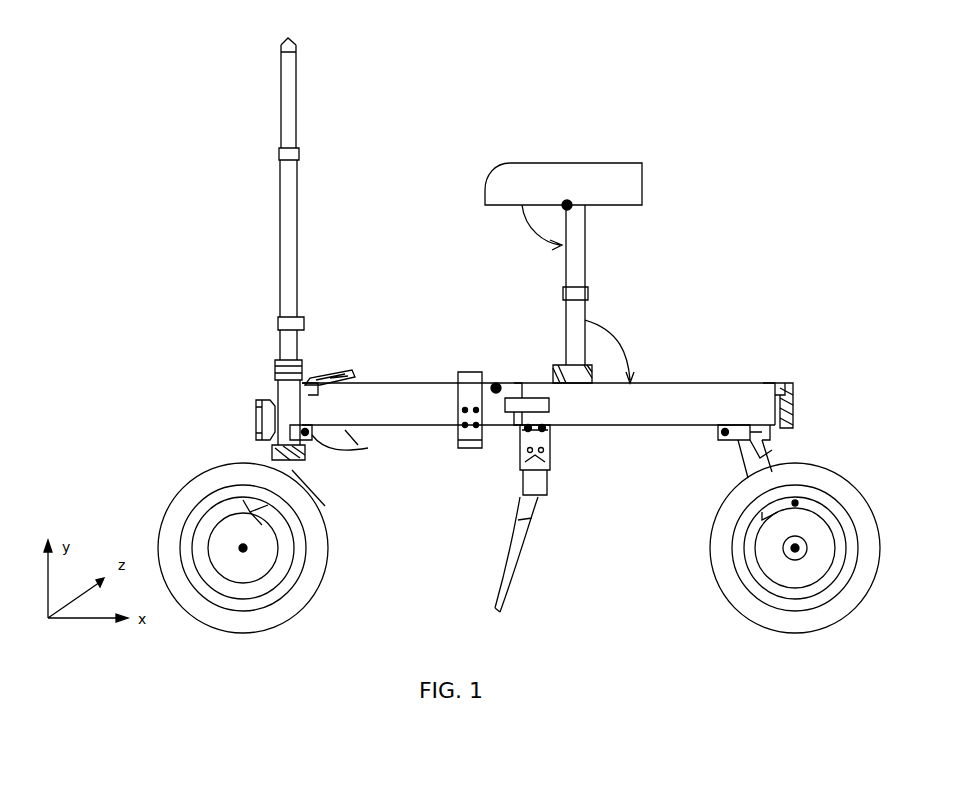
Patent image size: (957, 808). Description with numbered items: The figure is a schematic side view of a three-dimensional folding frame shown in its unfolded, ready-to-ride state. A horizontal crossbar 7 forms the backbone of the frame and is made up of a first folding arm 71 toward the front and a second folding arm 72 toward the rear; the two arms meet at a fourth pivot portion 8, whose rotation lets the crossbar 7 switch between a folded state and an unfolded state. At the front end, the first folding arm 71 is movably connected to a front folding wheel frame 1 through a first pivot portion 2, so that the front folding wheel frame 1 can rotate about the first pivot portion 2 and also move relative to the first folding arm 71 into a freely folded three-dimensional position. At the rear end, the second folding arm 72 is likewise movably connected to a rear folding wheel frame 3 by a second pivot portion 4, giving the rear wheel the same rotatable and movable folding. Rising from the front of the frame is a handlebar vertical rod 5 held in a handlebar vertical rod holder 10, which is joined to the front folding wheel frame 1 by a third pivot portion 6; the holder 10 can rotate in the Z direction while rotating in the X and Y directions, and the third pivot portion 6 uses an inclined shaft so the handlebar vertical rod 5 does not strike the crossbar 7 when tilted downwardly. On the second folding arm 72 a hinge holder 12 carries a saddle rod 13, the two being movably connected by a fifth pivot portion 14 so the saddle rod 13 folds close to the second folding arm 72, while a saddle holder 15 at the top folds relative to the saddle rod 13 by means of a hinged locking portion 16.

The front folding wheel frame 1 is at (253, 431).
The first pivot portion 2 is at (330, 438).
The rear folding wheel frame 3 is at (770, 456).
The second pivot portion 4 is at (735, 425).
The handlebar vertical rod 5 is at (278, 343).
The third pivot portion 6 is at (303, 362).
The crossbar 7 is at (441, 427).
The fourth pivot portion 8 is at (498, 383).
The handlebar vertical rod holder 10 is at (275, 371).
The hinge holder 12 is at (575, 392).
The saddle rod 13 is at (577, 312).
The fifth pivot portion 14 is at (553, 370).
The saddle holder 15 is at (602, 178).
The hinged locking portion 16 is at (566, 202).
The first folding arm 71 is at (412, 393).
The second folding arm 72 is at (752, 383).